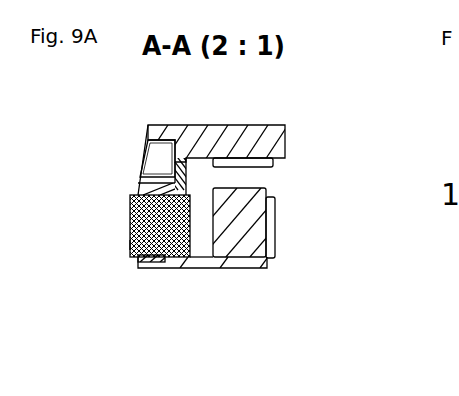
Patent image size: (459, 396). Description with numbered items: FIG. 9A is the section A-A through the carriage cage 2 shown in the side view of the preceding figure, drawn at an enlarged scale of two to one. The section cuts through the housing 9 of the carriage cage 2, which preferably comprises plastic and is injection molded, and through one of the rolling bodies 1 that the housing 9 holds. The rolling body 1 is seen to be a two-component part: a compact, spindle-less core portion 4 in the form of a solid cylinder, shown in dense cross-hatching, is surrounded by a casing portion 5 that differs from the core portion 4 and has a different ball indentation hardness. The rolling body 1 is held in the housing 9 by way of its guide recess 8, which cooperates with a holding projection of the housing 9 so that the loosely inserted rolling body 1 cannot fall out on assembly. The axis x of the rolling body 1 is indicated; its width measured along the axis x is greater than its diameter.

The rolling body 1 is at (128, 222).
The carriage cage 2 is at (300, 120).
The core portion 4 is at (178, 258).
The casing portion 5 is at (128, 198).
The recess 8 is at (163, 256).
The housing 9 is at (195, 138).
The axis X is at (128, 245).